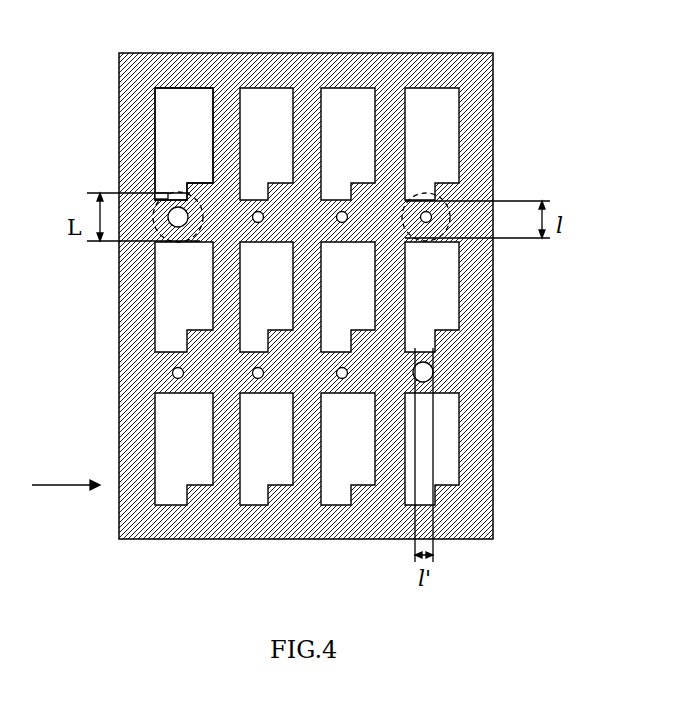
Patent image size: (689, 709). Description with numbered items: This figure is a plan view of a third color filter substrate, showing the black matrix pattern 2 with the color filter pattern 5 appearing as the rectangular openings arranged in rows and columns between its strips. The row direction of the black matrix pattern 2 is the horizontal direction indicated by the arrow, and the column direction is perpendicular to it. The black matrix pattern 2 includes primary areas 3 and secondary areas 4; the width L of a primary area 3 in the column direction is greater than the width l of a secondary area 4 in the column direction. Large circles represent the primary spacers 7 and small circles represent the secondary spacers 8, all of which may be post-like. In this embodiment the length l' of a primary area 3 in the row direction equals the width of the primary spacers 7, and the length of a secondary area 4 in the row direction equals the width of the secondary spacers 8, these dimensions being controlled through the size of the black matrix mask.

The black matrix pattern 2 is at (480, 95).
The color filter pattern 5 is at (155, 105).
The primary area 3 is at (152, 212).
The secondary area 4 is at (445, 212).
The primary spacers 7 is at (428, 368).
The secondary spacers 8 is at (172, 371).